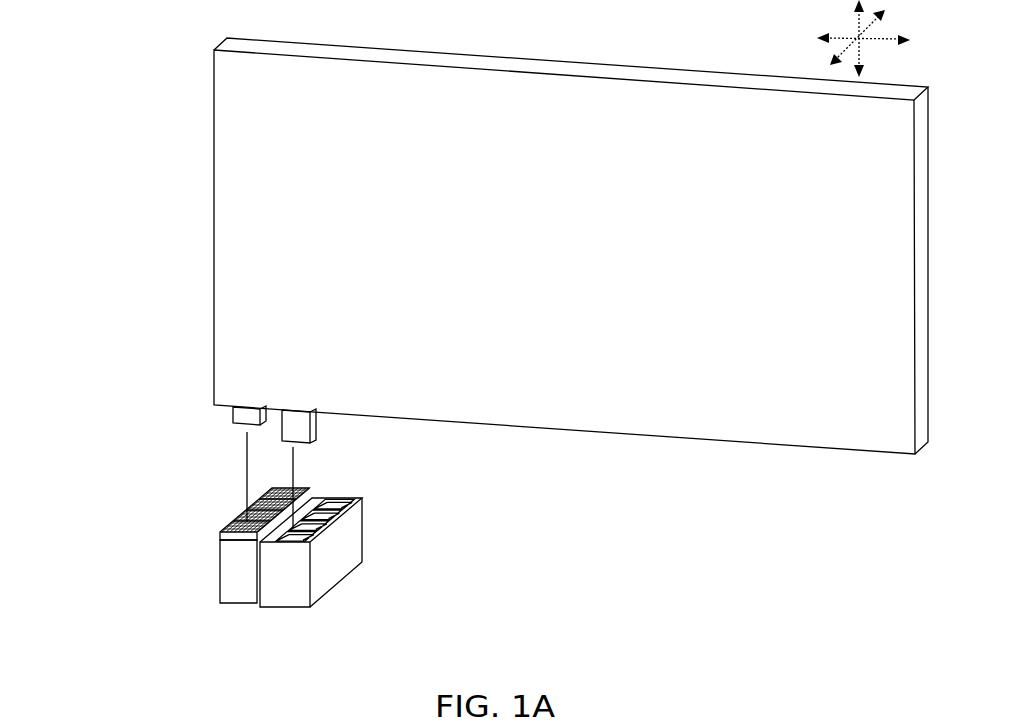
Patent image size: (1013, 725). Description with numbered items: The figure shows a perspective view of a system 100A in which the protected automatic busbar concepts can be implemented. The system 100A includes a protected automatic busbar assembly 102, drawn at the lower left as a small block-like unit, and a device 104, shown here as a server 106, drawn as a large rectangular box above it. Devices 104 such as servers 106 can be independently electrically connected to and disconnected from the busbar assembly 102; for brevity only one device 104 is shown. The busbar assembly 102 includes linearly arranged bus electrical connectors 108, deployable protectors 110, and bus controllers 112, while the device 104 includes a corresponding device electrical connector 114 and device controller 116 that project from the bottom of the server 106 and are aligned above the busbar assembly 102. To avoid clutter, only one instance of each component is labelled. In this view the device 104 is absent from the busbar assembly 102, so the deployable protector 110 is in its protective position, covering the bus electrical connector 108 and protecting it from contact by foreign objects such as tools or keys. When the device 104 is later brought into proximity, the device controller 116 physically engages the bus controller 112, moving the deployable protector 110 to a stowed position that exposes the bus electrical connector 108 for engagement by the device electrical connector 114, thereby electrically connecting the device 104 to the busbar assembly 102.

The system 100A is at (745, 37).
The protected automatic busbar assembly 102 is at (240, 615).
The device 104 is at (206, 75).
The server 106 is at (614, 262).
The bus electrical connector 108 is at (246, 539).
The deployable protector 110 is at (222, 527).
The bus controller 112 is at (315, 548).
The device electrical connector 114 is at (233, 417).
The device controller 116 is at (318, 439).